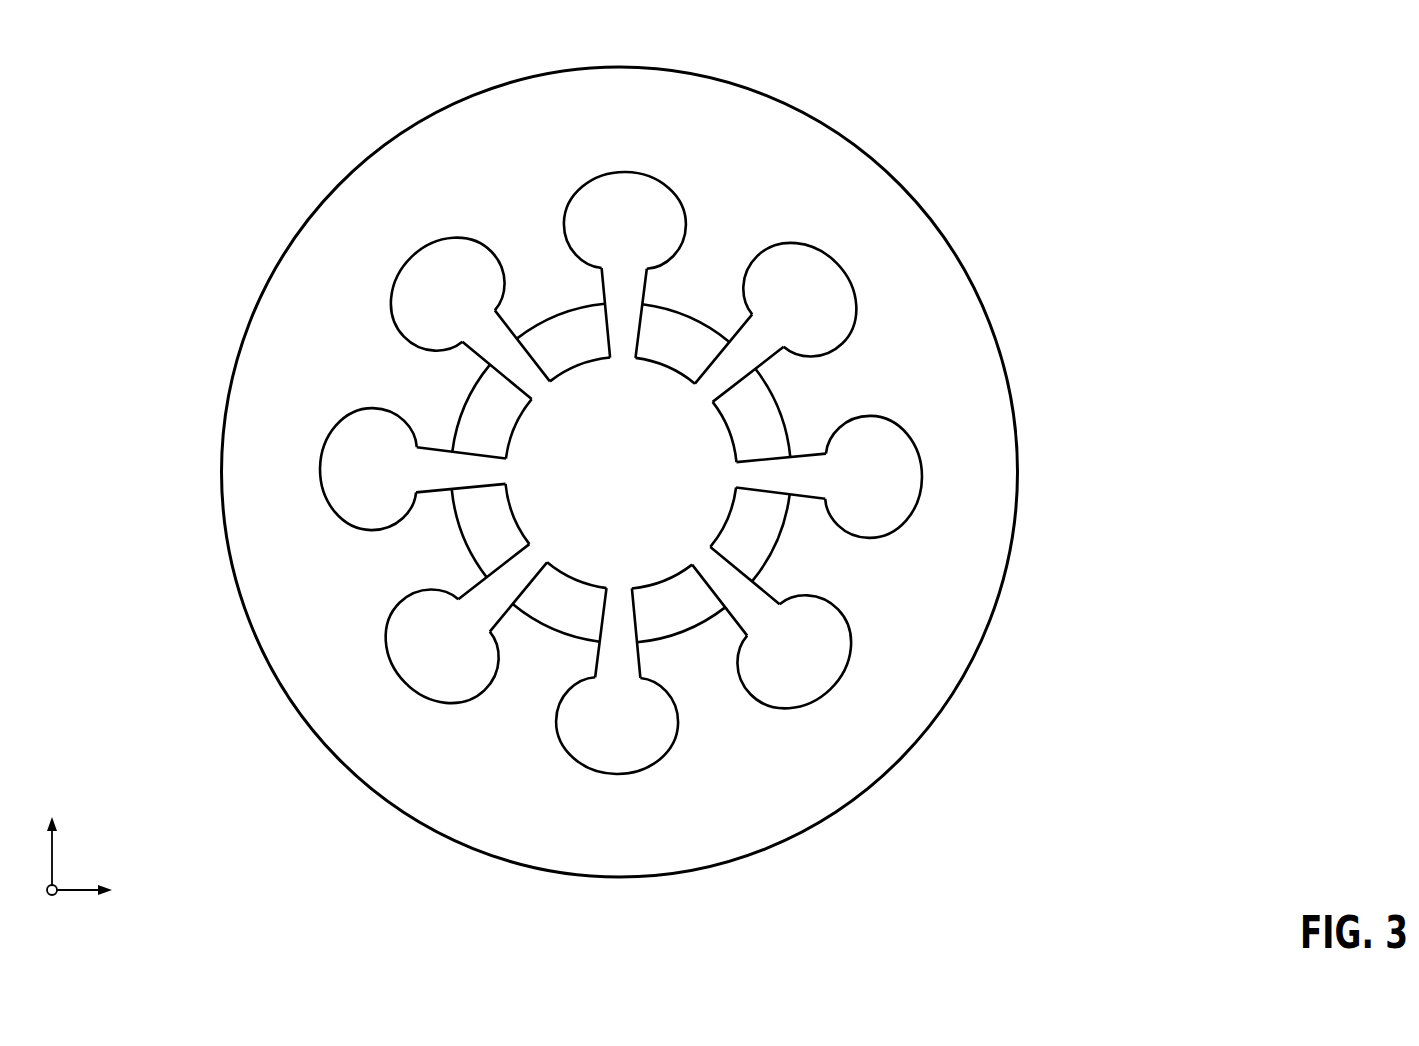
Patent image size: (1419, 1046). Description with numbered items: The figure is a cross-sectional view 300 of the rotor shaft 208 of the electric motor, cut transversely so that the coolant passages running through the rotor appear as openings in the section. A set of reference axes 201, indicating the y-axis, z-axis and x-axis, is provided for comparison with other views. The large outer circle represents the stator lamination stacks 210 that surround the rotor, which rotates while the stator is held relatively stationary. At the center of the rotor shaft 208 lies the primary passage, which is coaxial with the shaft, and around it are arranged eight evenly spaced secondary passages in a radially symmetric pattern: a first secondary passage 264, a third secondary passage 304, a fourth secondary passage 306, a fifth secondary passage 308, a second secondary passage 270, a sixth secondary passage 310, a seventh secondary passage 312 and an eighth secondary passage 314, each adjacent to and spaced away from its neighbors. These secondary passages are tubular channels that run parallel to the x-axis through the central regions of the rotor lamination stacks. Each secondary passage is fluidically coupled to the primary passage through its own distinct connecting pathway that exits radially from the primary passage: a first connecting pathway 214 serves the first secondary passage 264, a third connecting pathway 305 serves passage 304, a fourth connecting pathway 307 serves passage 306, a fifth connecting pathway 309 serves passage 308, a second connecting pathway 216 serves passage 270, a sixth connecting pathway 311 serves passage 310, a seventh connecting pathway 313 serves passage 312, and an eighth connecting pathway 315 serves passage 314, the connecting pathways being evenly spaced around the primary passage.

The reference axes 201 is at (95, 838).
The rotor shaft 208 is at (583, 348).
The stator lamination stacks 210 is at (573, 150).
The first connecting pathway 214 is at (620, 292).
The second connecting pathway 216 is at (638, 475).
The first secondary passage 264 is at (645, 235).
The second secondary passage 270 is at (628, 740).
The cross-sectional view 300 is at (1305, 75).
The third secondary passage 304 is at (825, 309).
The third connecting pathway 305 is at (755, 347).
The fourth secondary passage 306 is at (888, 488).
The fourth connecting pathway 307 is at (800, 482).
The fifth secondary passage 308 is at (823, 665).
The fifth connecting pathway 309 is at (747, 608).
The sixth secondary passage 310 is at (463, 662).
The sixth connecting pathway 311 is at (486, 601).
The seventh secondary passage 312 is at (385, 479).
The seventh connecting pathway 313 is at (440, 465).
The eighth secondary passage 314 is at (458, 309).
The eighth connecting pathway 315 is at (485, 337).